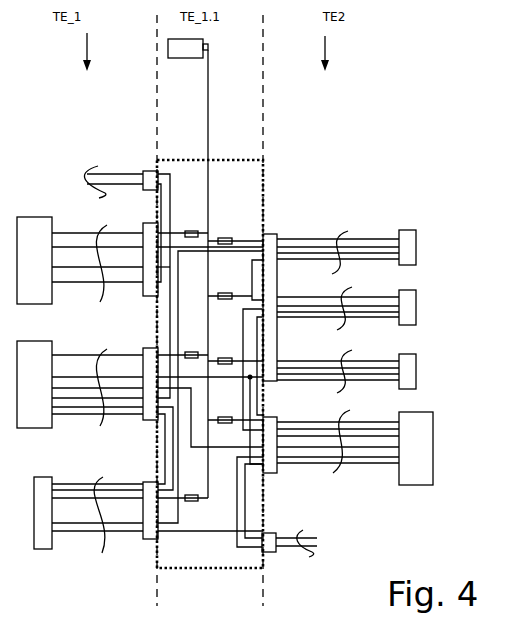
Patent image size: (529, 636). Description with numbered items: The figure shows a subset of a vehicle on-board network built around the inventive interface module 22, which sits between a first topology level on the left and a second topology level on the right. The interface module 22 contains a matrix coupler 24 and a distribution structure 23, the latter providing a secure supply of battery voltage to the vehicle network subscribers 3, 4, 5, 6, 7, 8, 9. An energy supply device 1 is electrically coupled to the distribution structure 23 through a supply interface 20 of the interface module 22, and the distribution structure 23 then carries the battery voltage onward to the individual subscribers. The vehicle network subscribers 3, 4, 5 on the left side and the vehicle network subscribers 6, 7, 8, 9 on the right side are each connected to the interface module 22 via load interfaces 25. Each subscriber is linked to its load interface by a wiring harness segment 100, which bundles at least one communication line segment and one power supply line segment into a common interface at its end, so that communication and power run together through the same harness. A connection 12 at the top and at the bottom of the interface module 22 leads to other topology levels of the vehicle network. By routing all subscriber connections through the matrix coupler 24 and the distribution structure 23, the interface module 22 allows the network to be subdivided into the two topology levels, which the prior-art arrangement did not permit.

The energy supply device 1 is at (188, 48).
The vehicle network subscriber 3 is at (87, 260).
The vehicle network subscriber 4 is at (87, 384).
The vehicle network subscriber 5 is at (96, 515).
The vehicle network subscriber 6 is at (407, 247).
The vehicle network subscriber 7 is at (346, 308).
The vehicle network subscriber 8 is at (346, 371).
The vehicle network subscriber 9 is at (355, 447).
The connection to other topology levels 12 is at (200, 357).
The supply interface 20 is at (203, 148).
The interface module 22 is at (250, 178).
The distribution structure 23 is at (216, 274).
The matrix coupler 24 is at (248, 345).
The load interface 25 is at (266, 225).
The wiring harness segment 100 is at (310, 229).